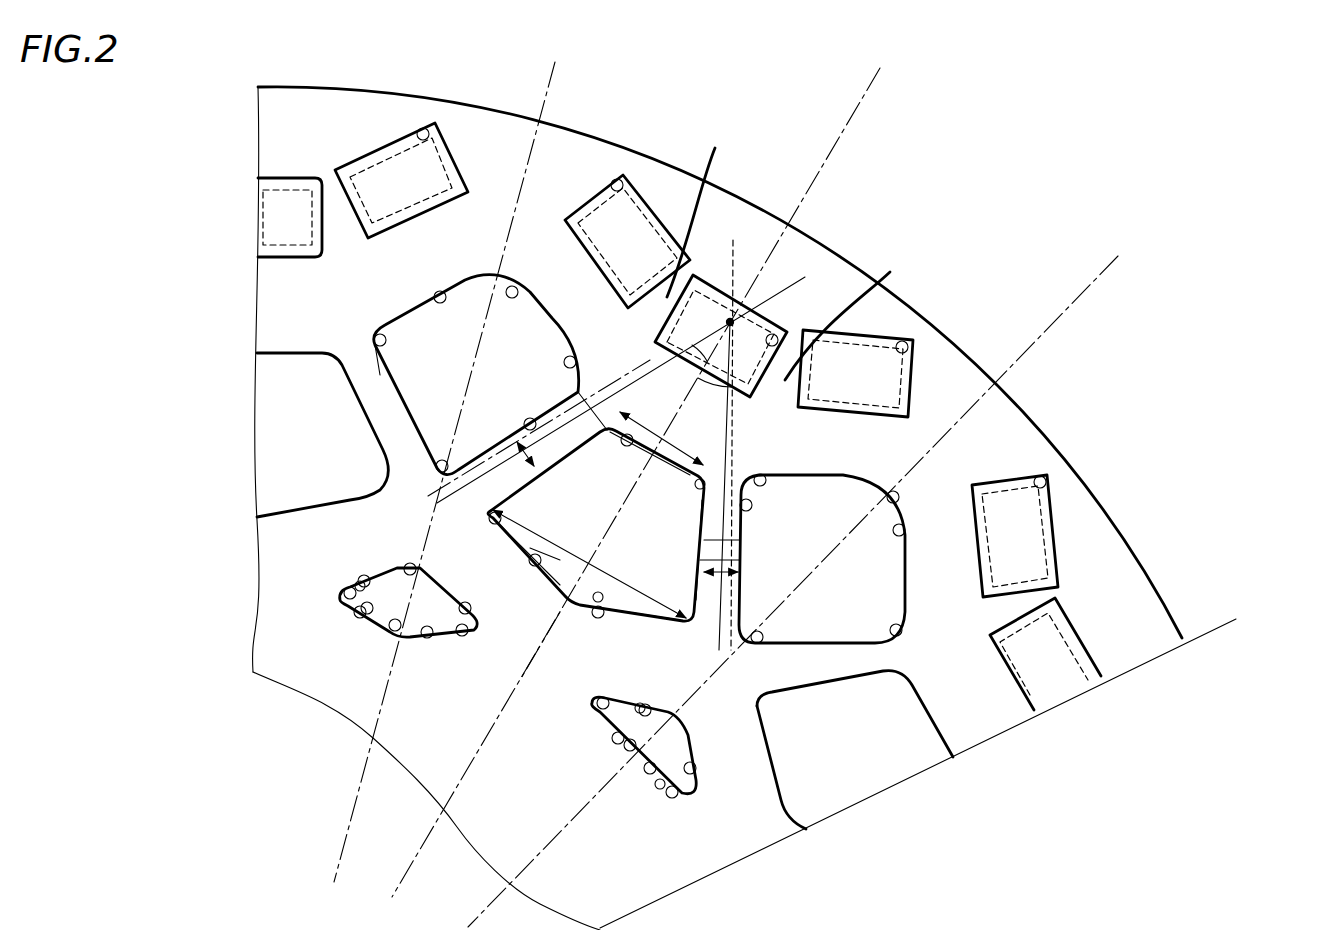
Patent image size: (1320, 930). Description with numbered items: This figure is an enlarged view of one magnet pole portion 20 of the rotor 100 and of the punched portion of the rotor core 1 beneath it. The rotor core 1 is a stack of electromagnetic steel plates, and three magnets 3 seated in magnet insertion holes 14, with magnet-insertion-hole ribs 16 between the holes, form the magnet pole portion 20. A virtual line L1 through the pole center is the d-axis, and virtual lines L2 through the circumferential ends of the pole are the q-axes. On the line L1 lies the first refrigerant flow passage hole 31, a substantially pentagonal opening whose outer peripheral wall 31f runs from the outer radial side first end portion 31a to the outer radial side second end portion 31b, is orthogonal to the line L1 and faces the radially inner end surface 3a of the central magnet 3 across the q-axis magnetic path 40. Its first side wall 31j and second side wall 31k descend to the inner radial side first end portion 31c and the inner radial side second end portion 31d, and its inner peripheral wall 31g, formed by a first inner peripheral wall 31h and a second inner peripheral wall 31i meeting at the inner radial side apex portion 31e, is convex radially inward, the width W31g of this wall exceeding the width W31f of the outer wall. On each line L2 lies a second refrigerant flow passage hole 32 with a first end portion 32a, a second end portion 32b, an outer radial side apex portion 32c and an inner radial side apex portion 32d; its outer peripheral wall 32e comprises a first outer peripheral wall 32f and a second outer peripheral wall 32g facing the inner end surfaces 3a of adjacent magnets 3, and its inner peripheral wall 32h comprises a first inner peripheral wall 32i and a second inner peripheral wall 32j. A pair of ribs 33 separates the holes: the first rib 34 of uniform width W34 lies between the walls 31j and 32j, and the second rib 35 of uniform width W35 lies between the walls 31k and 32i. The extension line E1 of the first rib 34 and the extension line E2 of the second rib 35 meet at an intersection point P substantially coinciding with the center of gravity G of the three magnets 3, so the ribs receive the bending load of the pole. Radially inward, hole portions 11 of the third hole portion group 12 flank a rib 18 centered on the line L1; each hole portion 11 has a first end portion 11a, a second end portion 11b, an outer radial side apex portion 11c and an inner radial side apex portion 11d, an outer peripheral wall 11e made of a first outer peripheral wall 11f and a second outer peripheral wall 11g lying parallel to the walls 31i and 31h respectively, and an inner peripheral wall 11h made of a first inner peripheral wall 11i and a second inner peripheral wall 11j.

The rotor core 1 is at (1170, 613).
The magnet 3 is at (452, 150).
The radially inner end surface 3a is at (410, 210).
The hole portion 11 is at (432, 582).
The first end portion 11a is at (342, 597).
The second end portion 11b is at (458, 640).
The outer radial side apex portion 11c is at (398, 565).
The inner radial side apex portion 11d is at (392, 637).
The outer peripheral wall 11e is at (484, 649).
The first outer peripheral wall 11f is at (358, 588).
The second outer peripheral wall 11g is at (470, 618).
The inner peripheral wall 11h is at (478, 746).
The first inner peripheral wall 11i is at (372, 618).
The second inner peripheral wall 11j is at (430, 639).
The third hole portion group 12 is at (698, 800).
The magnet insertion hole 14 is at (425, 128).
The magnet-insertion-hole rib 16 is at (784, 251).
The rib 18 is at (547, 663).
The magnet pole portion 20 is at (300, 87).
The first refrigerant flow passage hole 31 is at (685, 468).
The outer radial side first end portion 31a is at (612, 445).
The outer radial side second end portion 31b is at (698, 483).
The inner radial side first end portion 31c is at (490, 522).
The inner radial side second end portion 31d is at (605, 620).
The inner radial side apex portion 31e is at (545, 558).
The outer peripheral wall 31f is at (628, 432).
The inner peripheral wall 31g is at (554, 614).
The first inner peripheral wall 31h is at (533, 557).
The second inner peripheral wall 31i is at (592, 602).
The first side wall 31j is at (538, 468).
The second side wall 31k is at (698, 547).
The second refrigerant flow passage hole 32 is at (468, 290).
The first end portion 32a is at (387, 343).
The second end portion 32b is at (572, 358).
The outer radial side apex portion 32c is at (514, 296).
The inner radial side apex portion 32d is at (443, 460).
The outer peripheral wall 32e is at (620, 434).
The first outer peripheral wall 32f is at (438, 292).
The second outer peripheral wall 32g is at (552, 320).
The inner peripheral wall 32h is at (566, 475).
The first inner peripheral wall 32i is at (375, 350).
The second inner peripheral wall 32j is at (530, 418).
The pair of ribs 33 is at (709, 452).
The first rib 34 is at (590, 410).
The second rib 35 is at (720, 505).
The q-axis magnetic path 40 is at (567, 262).
The rotor 100 is at (1188, 295).
The virtual line L1 is at (642, 467).
The virtual line L2 is at (741, 478).
The extension line of the first rib E1 is at (631, 381).
The extension line of the second rib E2 is at (734, 432).
The intersection point P is at (732, 320).
The center of gravity G is at (804, 262).
The width of the outer peripheral wall W31f is at (715, 460).
The width of the inner peripheral wall W31g is at (603, 578).
The width of the first rib W34 is at (437, 505).
The width of the second rib W35 is at (709, 615).